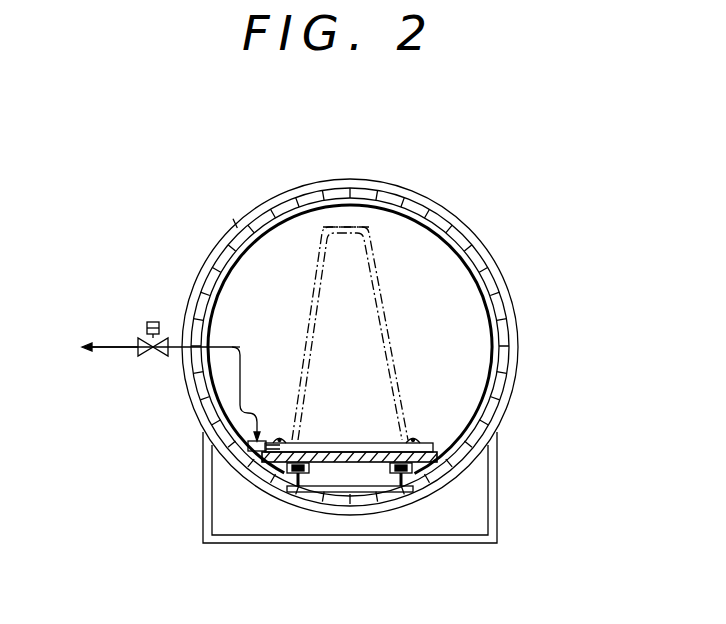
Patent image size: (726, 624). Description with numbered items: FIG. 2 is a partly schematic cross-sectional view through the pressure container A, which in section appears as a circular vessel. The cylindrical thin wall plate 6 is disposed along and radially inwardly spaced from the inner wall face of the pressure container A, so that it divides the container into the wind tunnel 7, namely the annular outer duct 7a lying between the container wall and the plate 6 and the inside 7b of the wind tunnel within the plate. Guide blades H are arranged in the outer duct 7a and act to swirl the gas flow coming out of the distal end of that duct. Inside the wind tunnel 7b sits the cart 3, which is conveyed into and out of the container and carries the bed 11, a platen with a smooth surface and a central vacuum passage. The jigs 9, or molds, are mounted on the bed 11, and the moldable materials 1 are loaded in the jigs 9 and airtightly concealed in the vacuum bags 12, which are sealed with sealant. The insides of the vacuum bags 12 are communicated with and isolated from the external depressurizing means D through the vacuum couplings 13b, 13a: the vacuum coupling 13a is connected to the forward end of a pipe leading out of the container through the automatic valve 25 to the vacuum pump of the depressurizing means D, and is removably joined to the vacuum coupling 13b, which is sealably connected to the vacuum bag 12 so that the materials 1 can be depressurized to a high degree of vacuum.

The moldable materials 1 is at (385, 313).
The cart 3 is at (316, 454).
The cylindrical thin wall plate 6 is at (433, 214).
The wind tunnel 7 is at (350, 295).
The outer duct 7a is at (382, 195).
The inside of wind tunnel 7b is at (399, 238).
The jigs 9 is at (360, 372).
The bed 11 is at (348, 462).
The vacuum bags 12 is at (377, 258).
The vacuum coupling 13a is at (236, 410).
The vacuum coupling 13b is at (185, 430).
The automatic valve 25 is at (153, 322).
The pressure container A is at (250, 492).
The external depressurizing means D is at (94, 349).
The guide blades H is at (252, 232).